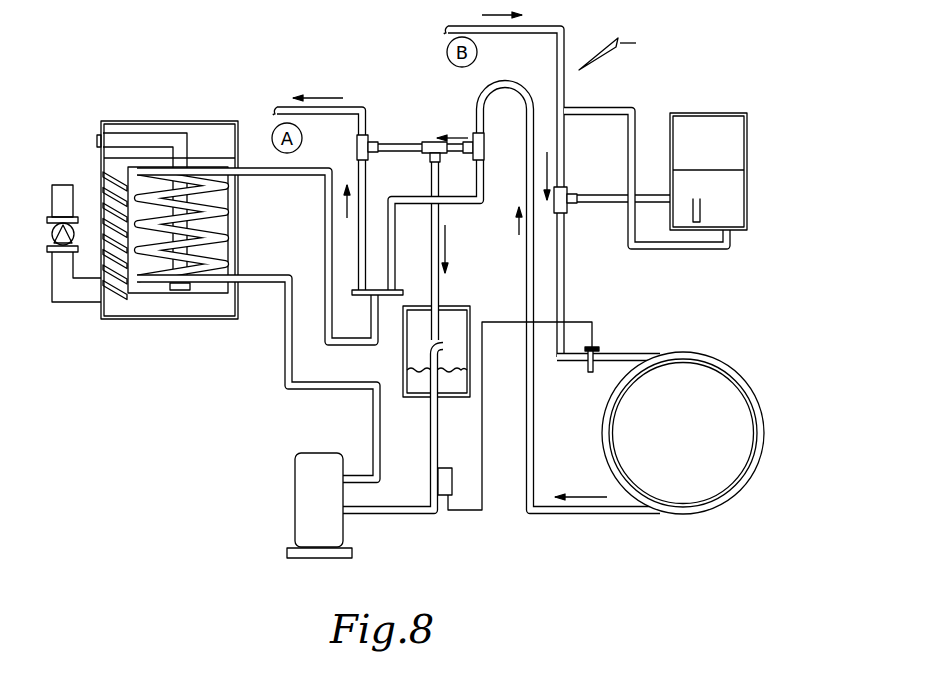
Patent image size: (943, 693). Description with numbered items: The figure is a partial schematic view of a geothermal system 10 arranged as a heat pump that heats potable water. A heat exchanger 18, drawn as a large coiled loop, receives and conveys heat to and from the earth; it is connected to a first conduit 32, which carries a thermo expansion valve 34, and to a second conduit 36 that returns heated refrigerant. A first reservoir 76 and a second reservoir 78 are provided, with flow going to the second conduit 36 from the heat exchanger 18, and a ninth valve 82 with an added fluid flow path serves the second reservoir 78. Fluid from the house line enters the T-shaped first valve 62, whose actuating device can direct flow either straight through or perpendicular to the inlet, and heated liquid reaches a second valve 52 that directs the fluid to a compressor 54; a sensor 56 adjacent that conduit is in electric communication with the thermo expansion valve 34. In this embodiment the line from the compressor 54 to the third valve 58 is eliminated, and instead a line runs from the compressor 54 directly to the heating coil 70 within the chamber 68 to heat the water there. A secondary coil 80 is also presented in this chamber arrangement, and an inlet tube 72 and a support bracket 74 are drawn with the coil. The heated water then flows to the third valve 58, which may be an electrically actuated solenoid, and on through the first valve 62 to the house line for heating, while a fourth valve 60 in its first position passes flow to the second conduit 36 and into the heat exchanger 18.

The system 10 is at (620, 49).
The heat exchanger 18 is at (726, 365).
The first conduit 32 is at (636, 354).
The thermo expansion valve 34 is at (594, 347).
The second conduit 36 is at (563, 514).
The second valve 52 is at (428, 143).
The compressor 54 is at (295, 517).
The sensor 56 is at (453, 490).
The third valve 58 is at (399, 290).
The fourth valve 60 is at (473, 136).
The first valve 62 is at (357, 146).
The chamber 68 is at (158, 293).
The heating coil 70 is at (145, 287).
The inlet tube 72 is at (100, 137).
The support bracket 74 is at (185, 291).
The first reservoir 76 is at (53, 233).
The second reservoir 78 is at (747, 192).
The secondary coil 80 is at (117, 301).
The ninth valve 82 is at (567, 208).